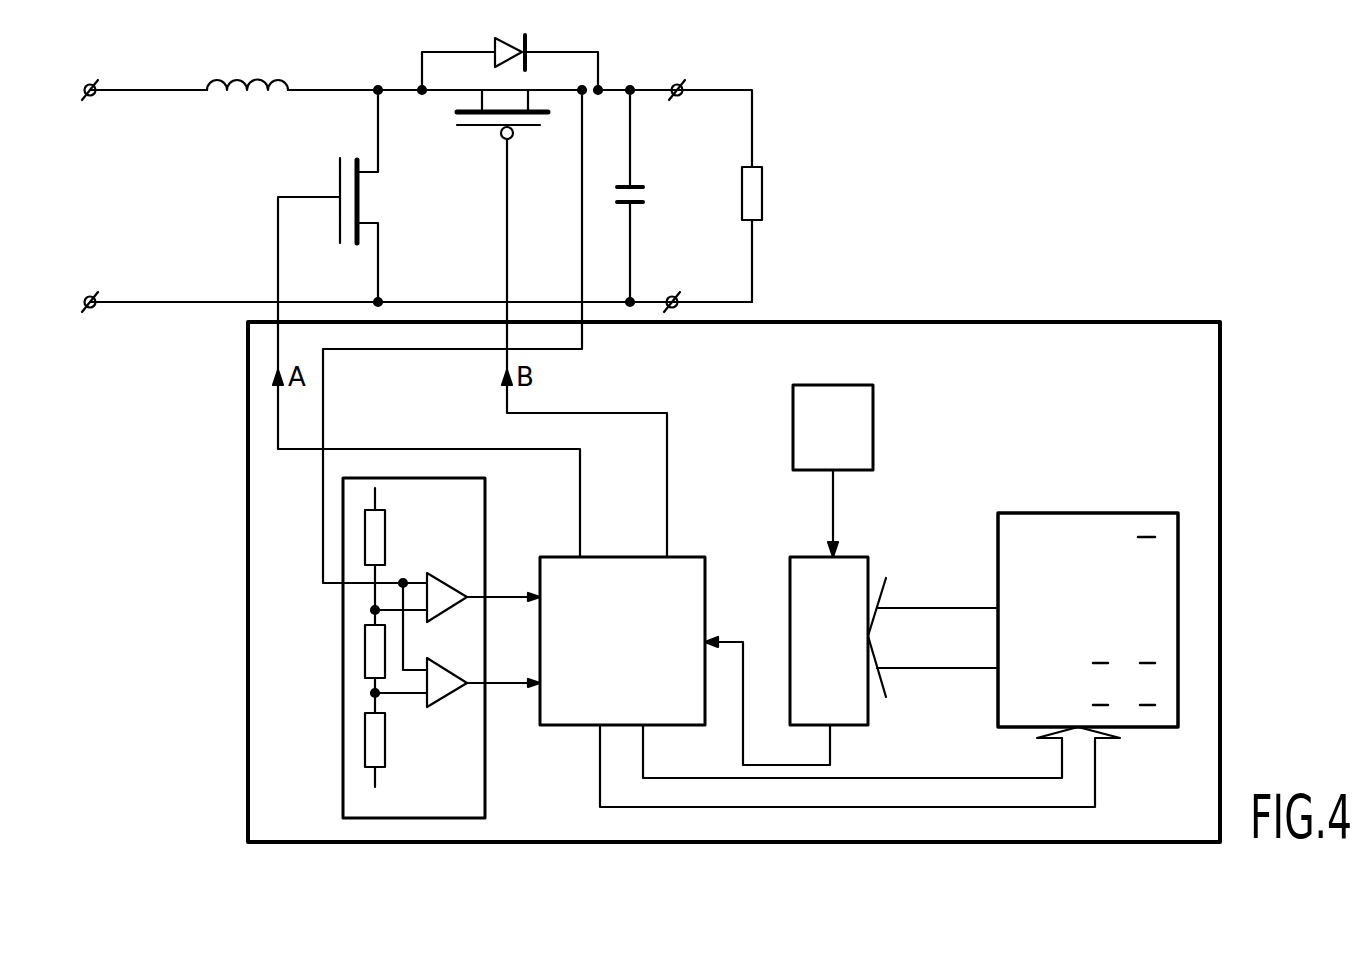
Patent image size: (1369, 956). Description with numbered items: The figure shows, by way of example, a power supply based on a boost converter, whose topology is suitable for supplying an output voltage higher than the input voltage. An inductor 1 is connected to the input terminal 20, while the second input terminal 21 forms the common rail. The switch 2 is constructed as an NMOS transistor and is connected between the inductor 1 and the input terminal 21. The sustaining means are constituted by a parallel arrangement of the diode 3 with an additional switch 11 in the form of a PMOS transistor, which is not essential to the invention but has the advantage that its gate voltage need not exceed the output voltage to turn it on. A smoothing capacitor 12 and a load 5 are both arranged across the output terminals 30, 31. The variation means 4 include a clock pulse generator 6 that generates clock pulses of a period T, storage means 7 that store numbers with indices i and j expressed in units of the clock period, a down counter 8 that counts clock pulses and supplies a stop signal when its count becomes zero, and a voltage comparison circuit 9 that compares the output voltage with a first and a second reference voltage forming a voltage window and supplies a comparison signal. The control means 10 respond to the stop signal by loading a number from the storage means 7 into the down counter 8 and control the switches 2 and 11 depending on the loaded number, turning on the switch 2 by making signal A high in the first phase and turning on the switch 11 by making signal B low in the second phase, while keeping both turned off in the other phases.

The inductor 1 is at (255, 75).
The switch 2 is at (368, 197).
The diode 3 is at (498, 37).
The variation means 4 is at (1128, 322).
The load 5 is at (752, 192).
The clock pulse generator 6 is at (855, 398).
The storage means 7 is at (1120, 513).
The down counter 8 is at (852, 556).
The voltage comparison circuit 9 is at (495, 494).
The control means 10 is at (684, 556).
The additional switch 11 is at (540, 120).
The smoothing capacitor 12 is at (648, 198).
The input terminal 20 is at (86, 84).
The input terminal 21 is at (86, 296).
The output terminal 30 is at (677, 84).
The output terminal 31 is at (672, 296).